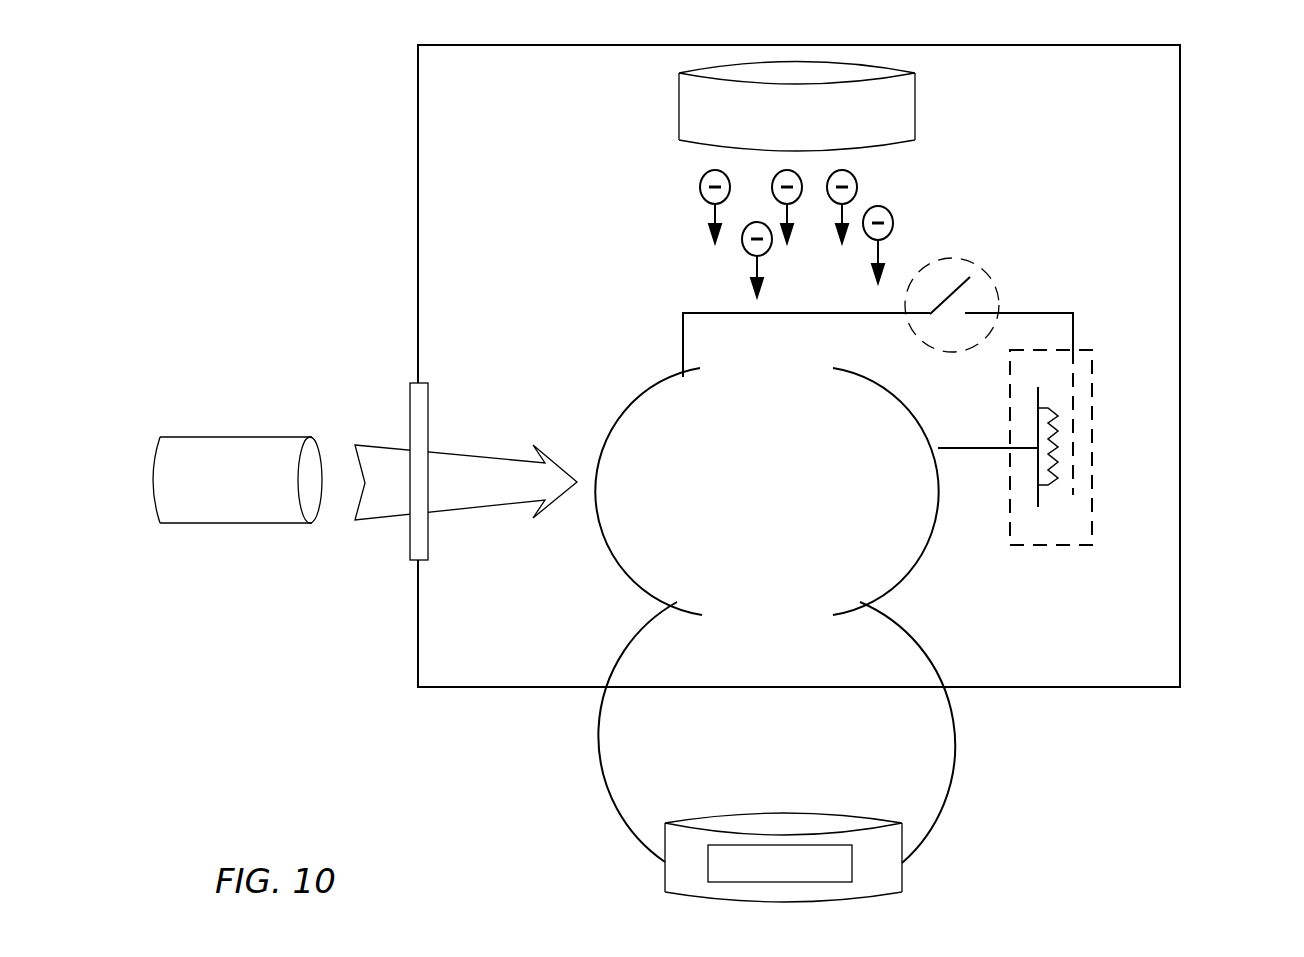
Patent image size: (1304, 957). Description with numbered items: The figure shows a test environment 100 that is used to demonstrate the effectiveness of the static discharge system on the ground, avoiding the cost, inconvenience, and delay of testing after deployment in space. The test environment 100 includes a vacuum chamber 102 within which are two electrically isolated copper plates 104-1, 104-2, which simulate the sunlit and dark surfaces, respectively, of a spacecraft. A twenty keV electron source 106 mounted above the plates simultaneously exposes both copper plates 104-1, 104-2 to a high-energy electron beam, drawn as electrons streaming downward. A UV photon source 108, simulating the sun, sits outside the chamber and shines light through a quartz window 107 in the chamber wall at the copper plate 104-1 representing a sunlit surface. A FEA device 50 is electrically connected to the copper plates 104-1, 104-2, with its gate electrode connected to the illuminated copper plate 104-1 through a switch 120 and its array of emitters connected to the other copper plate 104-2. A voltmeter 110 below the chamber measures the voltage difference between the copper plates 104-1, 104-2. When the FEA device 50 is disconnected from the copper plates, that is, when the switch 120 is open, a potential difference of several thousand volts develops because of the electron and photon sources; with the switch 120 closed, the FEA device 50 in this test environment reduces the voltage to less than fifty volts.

The test environment 100 is at (200, 112).
The vacuum chamber 102 is at (1180, 207).
The copper plate 104-1 is at (650, 402).
The copper plate 104-2 is at (863, 383).
The electron source 106 is at (817, 130).
The quartz window 107 is at (437, 383).
The UV photon source 108 is at (248, 493).
The voltmeter 110 is at (868, 847).
The switch 120 is at (993, 275).
The FEA device 50 is at (1092, 455).